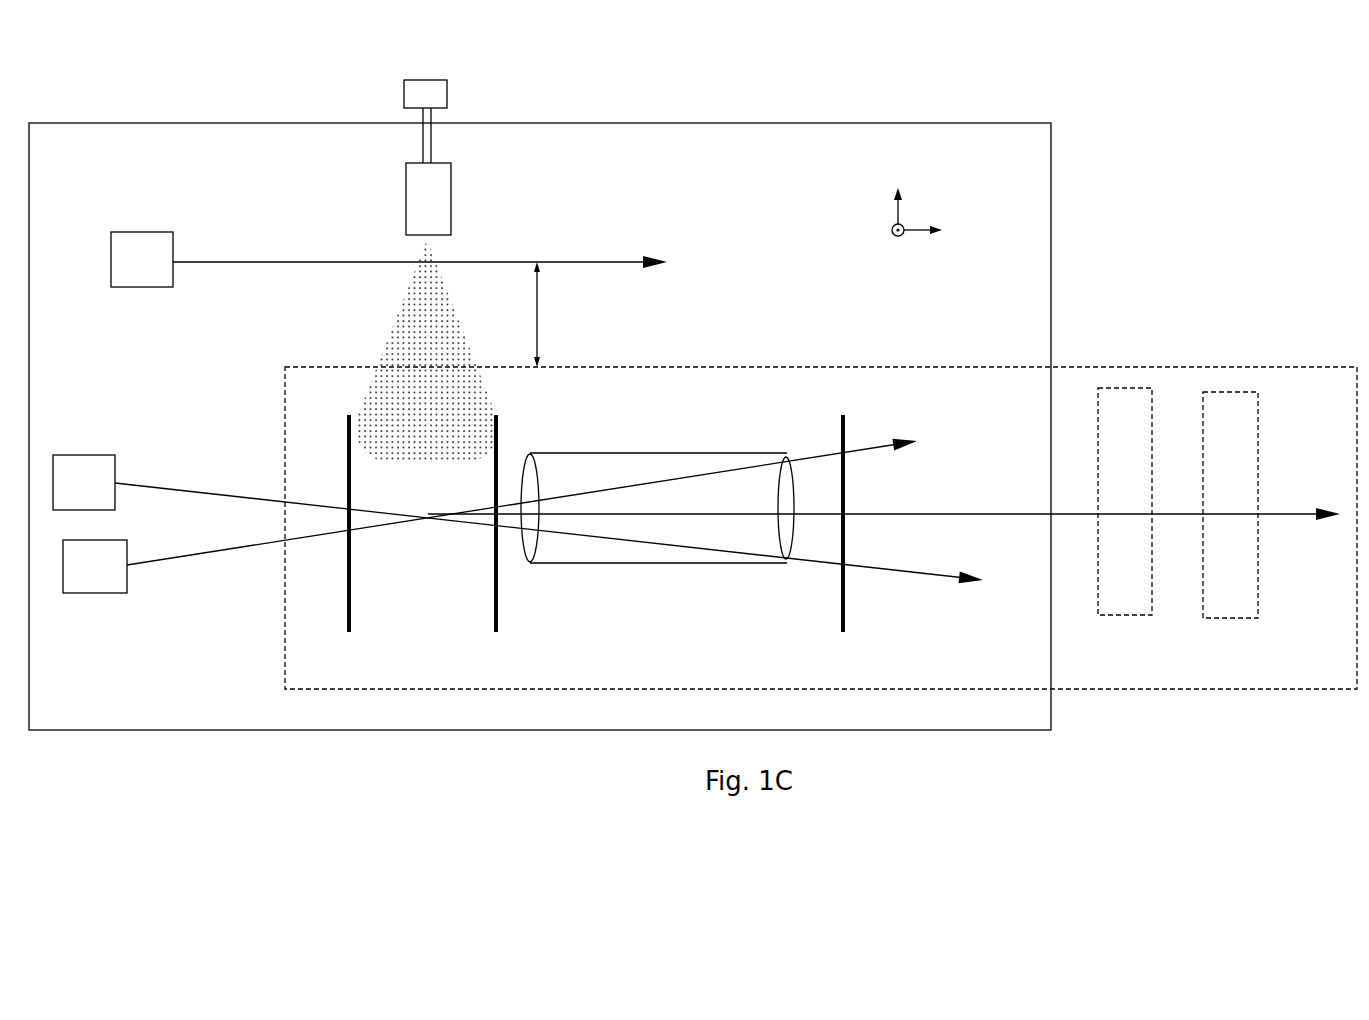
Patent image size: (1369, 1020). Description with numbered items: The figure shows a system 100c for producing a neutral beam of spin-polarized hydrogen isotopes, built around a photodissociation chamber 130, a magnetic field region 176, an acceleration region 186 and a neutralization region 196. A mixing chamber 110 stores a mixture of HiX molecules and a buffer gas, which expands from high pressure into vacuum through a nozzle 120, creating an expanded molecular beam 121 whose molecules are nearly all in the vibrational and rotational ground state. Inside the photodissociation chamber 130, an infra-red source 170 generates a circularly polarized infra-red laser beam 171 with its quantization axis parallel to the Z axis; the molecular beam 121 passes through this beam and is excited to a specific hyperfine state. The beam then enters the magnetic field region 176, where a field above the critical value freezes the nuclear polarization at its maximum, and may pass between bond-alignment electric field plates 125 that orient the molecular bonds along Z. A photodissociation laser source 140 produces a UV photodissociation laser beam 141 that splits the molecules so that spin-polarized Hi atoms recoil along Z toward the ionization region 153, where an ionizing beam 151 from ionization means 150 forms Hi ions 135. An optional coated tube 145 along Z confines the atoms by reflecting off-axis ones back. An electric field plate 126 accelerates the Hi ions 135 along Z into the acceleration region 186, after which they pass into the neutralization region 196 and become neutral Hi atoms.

The system 100c is at (1240, 122).
The mixing chamber 110 is at (447, 93).
The nozzle 120 is at (451, 200).
The expanded molecular beam 121 is at (405, 333).
The bond-alignment electric field plates 125 is at (494, 628).
The electric field plate 126 is at (843, 605).
The photodissociation chamber 130 is at (695, 123).
The Hi ions 135 is at (1027, 514).
The photodissociation laser source 140 is at (80, 455).
The photodissociation laser beam 141 is at (207, 490).
The tube 145 is at (685, 452).
The ionization means 150 is at (107, 593).
The ionizing beam 151 is at (180, 557).
The ionization region 153 is at (657, 600).
The infra-red source 170 is at (145, 232).
The infra-red laser beam 171 is at (272, 262).
The magnetic field region 176 is at (1270, 689).
The acceleration region 186 is at (1135, 388).
The neutralization region 196 is at (1237, 392).